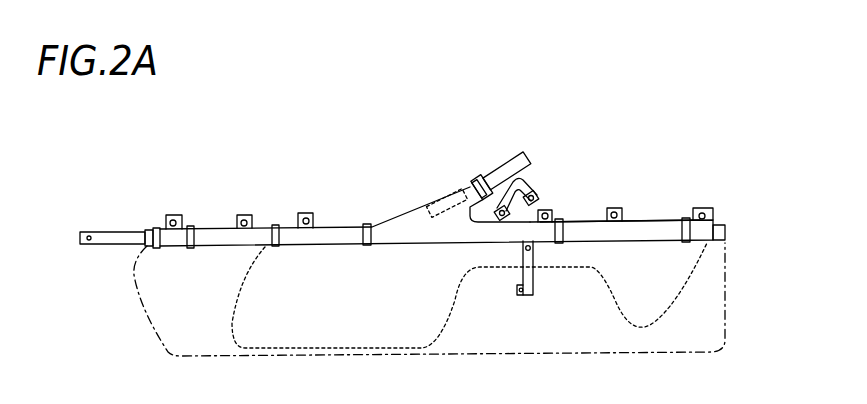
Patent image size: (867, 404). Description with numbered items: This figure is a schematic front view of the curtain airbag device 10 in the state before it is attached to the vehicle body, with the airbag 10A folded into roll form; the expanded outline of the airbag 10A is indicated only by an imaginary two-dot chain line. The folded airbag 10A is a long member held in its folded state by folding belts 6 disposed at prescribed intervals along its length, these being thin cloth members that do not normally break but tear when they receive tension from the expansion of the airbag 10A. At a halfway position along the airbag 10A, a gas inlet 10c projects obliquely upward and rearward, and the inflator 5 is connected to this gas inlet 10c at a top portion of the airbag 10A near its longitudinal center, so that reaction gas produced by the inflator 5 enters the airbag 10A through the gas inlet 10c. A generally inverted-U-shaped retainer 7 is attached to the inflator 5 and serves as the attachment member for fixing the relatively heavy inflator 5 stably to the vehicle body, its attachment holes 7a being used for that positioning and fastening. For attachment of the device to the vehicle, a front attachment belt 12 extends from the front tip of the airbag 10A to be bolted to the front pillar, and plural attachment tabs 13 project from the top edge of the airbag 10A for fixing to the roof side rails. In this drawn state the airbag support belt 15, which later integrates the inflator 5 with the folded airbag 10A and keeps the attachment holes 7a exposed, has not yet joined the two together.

The curtain airbag device 10 is at (406, 184).
The gas inlet 10c is at (432, 204).
The airbag 10A is at (588, 219).
The front attachment belt 12 is at (120, 231).
The inflator 5 is at (507, 160).
The retainer 7 is at (526, 196).
The attachment holes 7a is at (506, 207).
The attachment tabs 13 is at (176, 214).
The folding belts 6 is at (190, 227).
The airbag support belt 15 is at (537, 268).